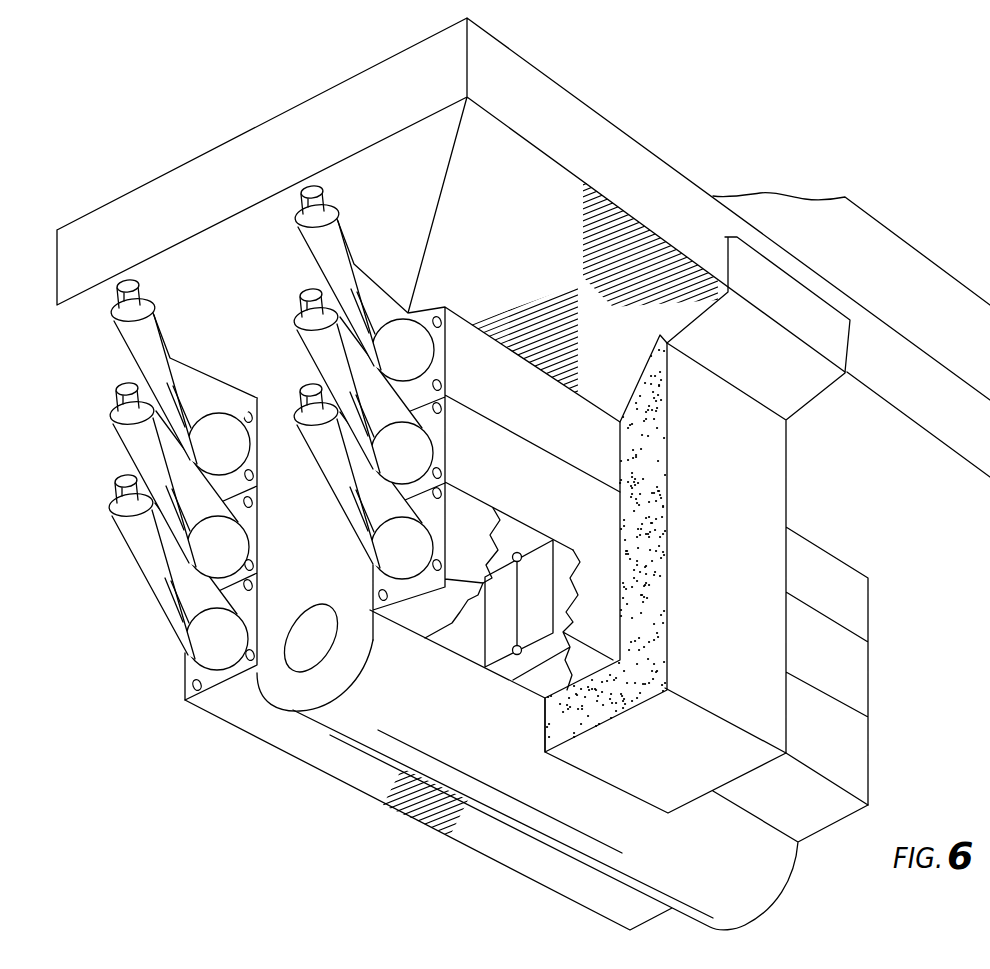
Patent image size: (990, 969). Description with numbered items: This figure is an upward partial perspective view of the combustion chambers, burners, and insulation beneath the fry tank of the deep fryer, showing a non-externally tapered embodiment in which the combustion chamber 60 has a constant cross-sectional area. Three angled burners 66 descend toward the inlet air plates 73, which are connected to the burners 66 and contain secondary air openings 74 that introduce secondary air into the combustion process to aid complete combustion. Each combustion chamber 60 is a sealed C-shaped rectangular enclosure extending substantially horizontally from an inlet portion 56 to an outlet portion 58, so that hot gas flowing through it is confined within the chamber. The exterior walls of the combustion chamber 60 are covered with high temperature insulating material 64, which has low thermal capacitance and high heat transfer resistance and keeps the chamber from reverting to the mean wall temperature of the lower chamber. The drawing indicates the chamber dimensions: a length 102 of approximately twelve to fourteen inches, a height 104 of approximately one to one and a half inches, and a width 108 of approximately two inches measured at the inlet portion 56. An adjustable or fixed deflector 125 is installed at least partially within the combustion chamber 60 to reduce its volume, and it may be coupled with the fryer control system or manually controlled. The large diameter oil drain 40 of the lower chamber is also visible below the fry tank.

The oil drain 40 is at (293, 677).
The inlet portion 56 is at (215, 681).
The outlet portion 58 is at (882, 750).
The combustion chamber 60 is at (347, 767).
The insulating material 64 is at (648, 423).
The angled burner 66 is at (147, 340).
The inlet air plate 73 is at (446, 352).
The secondary air openings 74 is at (437, 317).
The length 102 is at (858, 594).
The height 104 is at (555, 462).
The width 108 is at (443, 604).
The deflector 125 is at (482, 655).